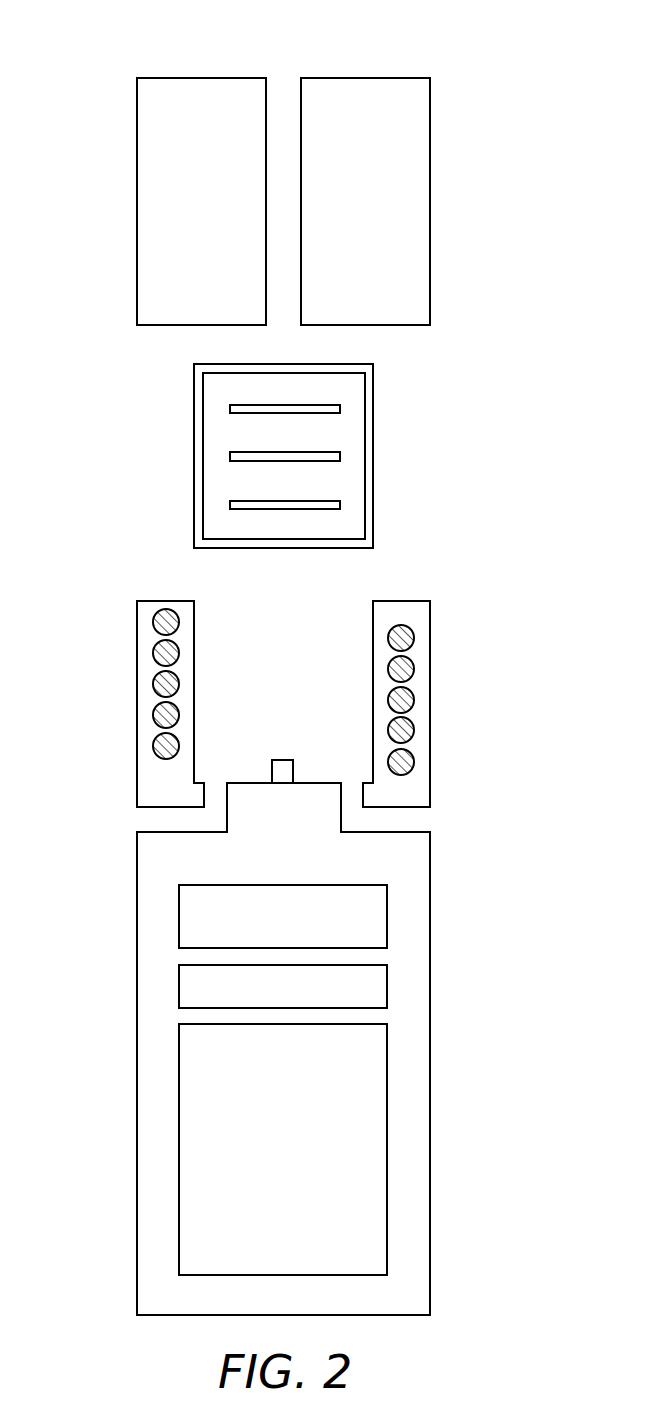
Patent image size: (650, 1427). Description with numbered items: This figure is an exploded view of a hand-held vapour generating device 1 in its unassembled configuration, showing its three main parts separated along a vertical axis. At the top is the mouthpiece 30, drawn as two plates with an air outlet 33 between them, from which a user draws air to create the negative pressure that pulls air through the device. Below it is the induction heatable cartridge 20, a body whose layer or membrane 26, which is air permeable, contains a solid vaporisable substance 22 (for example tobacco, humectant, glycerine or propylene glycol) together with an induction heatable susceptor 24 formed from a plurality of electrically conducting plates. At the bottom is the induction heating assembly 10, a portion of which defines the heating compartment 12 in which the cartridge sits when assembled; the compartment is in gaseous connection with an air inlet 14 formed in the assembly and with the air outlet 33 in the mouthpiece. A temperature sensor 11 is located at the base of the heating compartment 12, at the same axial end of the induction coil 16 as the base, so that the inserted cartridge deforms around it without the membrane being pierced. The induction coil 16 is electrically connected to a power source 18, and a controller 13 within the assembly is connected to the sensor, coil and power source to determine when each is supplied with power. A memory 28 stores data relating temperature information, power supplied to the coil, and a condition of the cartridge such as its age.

The vapour generating device 1 is at (106, 66).
The induction heating assembly 10 is at (137, 1297).
The temperature sensor 11 is at (283, 758).
The heating compartment 12 is at (284, 690).
The controller 13 is at (387, 896).
The air inlet 14 is at (142, 817).
The induction coil 16 is at (413, 697).
The power source 18 is at (387, 1037).
The induction heatable cartridge 20 is at (344, 456).
The vaporisable substance 22 is at (341, 435).
The induction heatable susceptor 24 is at (329, 505).
The layer or membrane 26 is at (373, 378).
The memory 28 is at (387, 976).
The mouthpiece 30 is at (430, 90).
The air outlet 33 is at (283, 86).